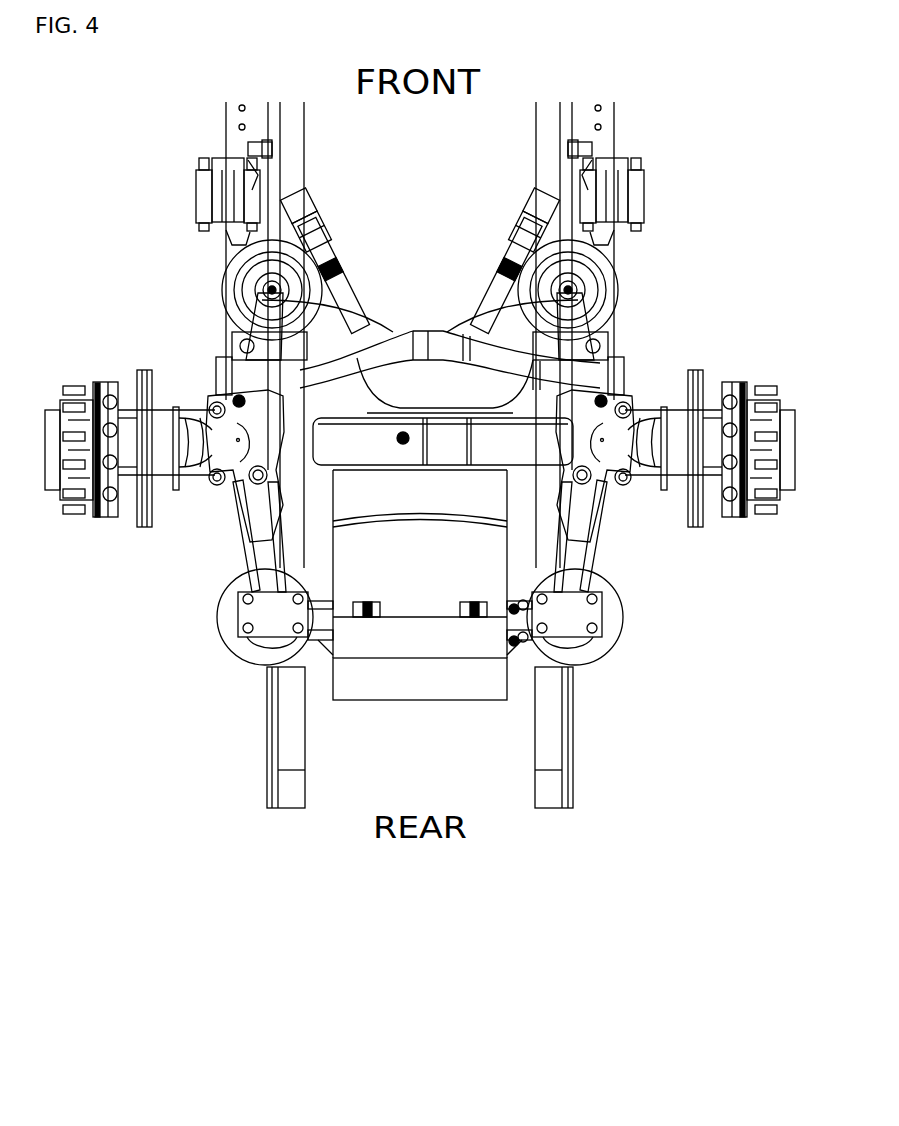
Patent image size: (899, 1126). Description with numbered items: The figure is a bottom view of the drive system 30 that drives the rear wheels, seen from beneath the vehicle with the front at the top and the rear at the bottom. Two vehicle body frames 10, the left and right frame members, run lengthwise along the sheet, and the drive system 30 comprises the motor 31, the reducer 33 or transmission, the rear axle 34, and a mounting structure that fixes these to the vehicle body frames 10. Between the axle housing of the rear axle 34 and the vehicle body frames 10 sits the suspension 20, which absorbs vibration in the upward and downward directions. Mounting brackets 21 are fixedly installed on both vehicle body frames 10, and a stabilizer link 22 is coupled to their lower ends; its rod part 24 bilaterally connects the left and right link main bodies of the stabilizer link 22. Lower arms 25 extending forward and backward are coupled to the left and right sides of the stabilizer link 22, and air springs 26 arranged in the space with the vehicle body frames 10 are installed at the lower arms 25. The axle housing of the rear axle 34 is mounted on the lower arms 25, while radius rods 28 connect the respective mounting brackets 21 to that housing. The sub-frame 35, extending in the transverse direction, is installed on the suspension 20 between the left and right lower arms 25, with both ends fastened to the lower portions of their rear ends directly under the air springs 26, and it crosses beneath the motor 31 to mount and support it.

The vehicle body frames 10 is at (545, 728).
The suspension 20 is at (674, 496).
The mounting brackets 21 is at (652, 197).
The stabilizer link 22 is at (327, 322).
The rod part 24 is at (327, 358).
The lower arms 25 is at (593, 567).
The air springs 26 is at (473, 657).
The radius rods 28 is at (323, 298).
The drive system 30 is at (302, 541).
The motor 31 is at (355, 683).
The reducer 33 is at (575, 552).
The rear axle 34 is at (497, 433).
The sub-frame 35 is at (457, 645).